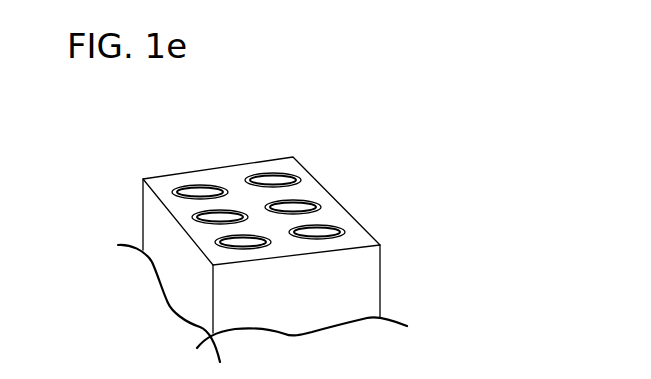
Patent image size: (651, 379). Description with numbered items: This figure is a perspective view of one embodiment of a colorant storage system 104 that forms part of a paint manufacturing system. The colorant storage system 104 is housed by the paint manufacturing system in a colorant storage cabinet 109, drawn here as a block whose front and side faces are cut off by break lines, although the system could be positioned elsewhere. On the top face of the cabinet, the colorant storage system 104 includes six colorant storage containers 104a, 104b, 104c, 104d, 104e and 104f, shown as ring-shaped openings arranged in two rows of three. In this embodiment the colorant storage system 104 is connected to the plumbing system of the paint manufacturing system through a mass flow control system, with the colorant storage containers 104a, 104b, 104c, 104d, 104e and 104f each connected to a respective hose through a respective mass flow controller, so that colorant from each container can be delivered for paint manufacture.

The colorant storage system 104 is at (217, 151).
The colorant storage container 104a is at (198, 190).
The colorant storage container 104b is at (218, 217).
The colorant storage container 104c is at (237, 241).
The colorant storage container 104d is at (270, 180).
The colorant storage container 104e is at (290, 207).
The colorant storage container 104f is at (317, 232).
The colorant storage cabinet 109 is at (414, 270).